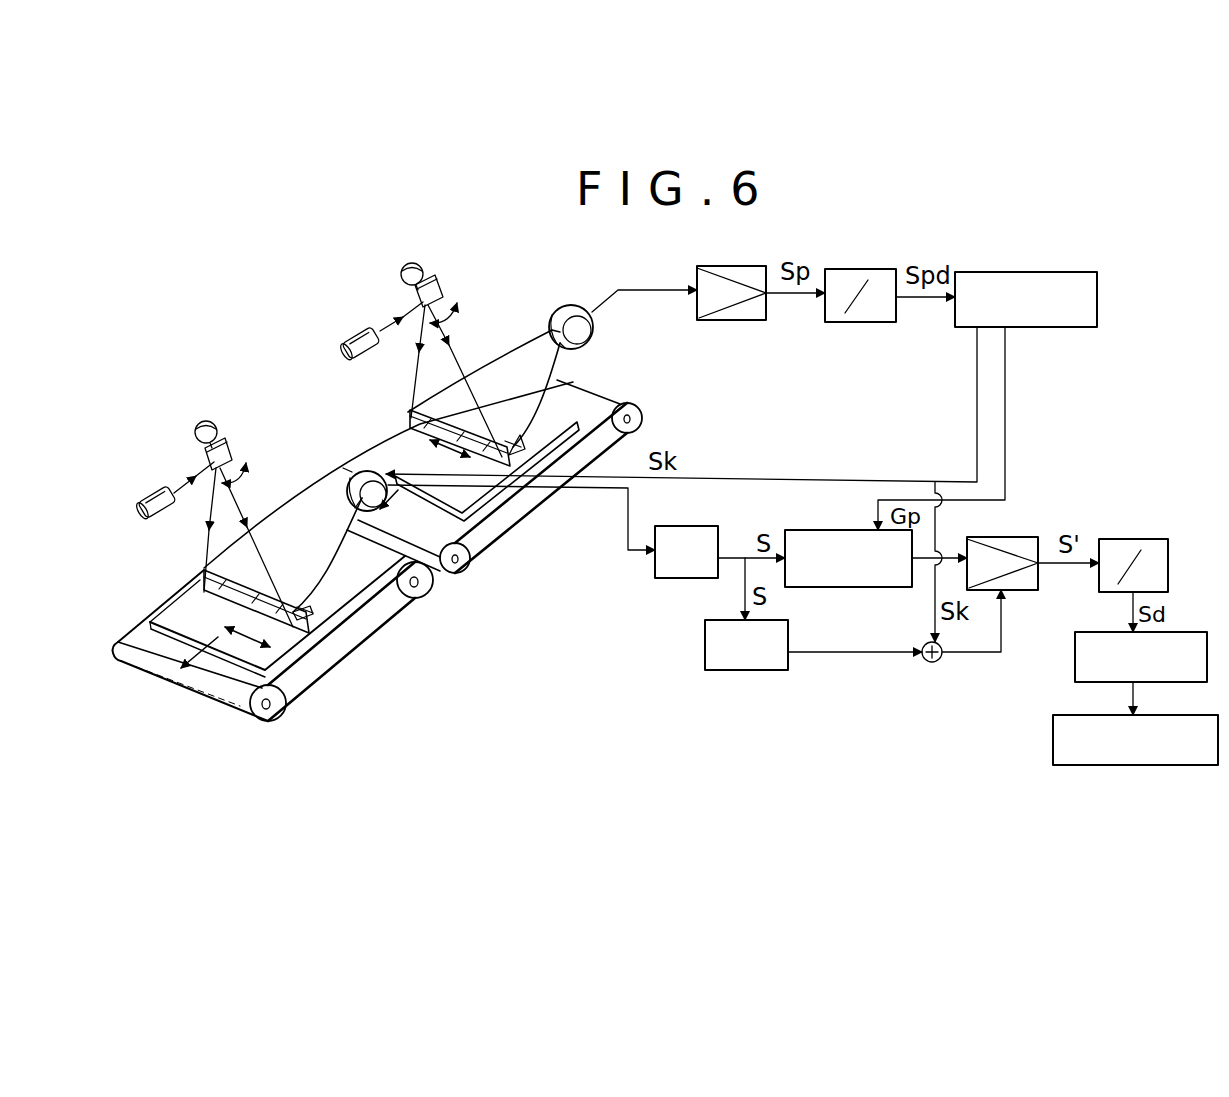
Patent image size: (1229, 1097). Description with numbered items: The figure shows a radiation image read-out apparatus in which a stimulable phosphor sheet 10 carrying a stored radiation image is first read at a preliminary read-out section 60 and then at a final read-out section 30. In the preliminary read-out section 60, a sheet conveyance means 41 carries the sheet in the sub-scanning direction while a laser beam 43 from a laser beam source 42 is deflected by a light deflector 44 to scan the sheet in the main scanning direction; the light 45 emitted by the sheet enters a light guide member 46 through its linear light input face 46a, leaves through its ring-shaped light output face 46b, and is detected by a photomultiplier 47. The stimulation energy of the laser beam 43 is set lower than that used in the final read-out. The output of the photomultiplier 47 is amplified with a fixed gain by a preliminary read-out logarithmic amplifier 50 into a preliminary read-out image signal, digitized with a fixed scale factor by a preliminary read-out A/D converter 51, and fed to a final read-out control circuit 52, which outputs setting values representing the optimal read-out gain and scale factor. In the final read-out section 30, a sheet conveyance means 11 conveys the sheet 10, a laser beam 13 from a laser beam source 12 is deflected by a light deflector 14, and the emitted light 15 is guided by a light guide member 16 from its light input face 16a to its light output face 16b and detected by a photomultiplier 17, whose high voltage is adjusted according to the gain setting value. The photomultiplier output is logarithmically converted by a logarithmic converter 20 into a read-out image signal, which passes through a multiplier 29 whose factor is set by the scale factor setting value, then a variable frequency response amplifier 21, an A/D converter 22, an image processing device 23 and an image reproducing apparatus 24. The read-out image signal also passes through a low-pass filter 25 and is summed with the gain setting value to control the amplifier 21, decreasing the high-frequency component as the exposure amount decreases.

The stimulable phosphor sheet 10 is at (288, 640).
The sheet conveyance means 11 is at (290, 694).
The laser beam source 12 is at (165, 485).
The laser beam 13 is at (212, 500).
The light deflector 14 is at (237, 452).
The emitted light 15 is at (222, 583).
The light guide member 16 is at (283, 500).
The light input face 16a is at (298, 604).
The light output face 16b is at (347, 471).
The photomultiplier 17 is at (368, 470).
The logarithmic converter 20 is at (718, 526).
The variable frequency response amplifier 21 is at (1020, 537).
The A/D converter 22 is at (1130, 539).
The image processing device 23 is at (1075, 667).
The image reproducing apparatus 24 is at (1053, 741).
The low-pass filter 25 is at (772, 671).
The multiplier 29 is at (852, 530).
The final read-out section 30 is at (223, 411).
The sheet conveyance means 41 is at (490, 540).
The laser beam source 42 is at (368, 320).
The laser beam 43 is at (462, 362).
The light deflector 44 is at (447, 285).
The emitted light 45 is at (428, 438).
The light guide member 46 is at (518, 333).
The light input face 46a is at (507, 437).
The light output face 46b is at (598, 340).
The photomultiplier 47 is at (562, 308).
The preliminary read-out logarithmic amplifier 50 is at (732, 266).
The preliminary read-out A/D converter 51 is at (862, 268).
The final read-out control circuit 52 is at (996, 272).
The preliminary read-out section 60 is at (345, 322).